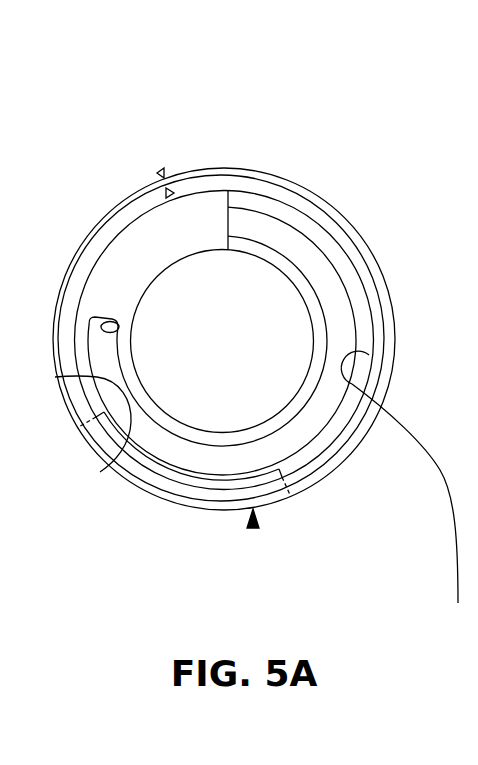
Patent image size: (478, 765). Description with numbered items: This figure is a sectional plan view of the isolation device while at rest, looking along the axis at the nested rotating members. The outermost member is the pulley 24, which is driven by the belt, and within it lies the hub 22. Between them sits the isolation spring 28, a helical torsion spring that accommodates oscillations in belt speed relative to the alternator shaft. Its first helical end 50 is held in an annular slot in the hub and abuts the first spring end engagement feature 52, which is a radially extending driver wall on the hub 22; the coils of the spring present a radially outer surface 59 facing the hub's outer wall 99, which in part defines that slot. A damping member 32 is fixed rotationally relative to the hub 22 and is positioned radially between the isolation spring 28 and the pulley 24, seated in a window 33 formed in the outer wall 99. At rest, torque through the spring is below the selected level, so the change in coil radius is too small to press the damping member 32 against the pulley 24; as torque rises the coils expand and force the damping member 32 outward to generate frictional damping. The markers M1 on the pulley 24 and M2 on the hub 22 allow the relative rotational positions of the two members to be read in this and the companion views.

The hub 22 is at (90, 302).
The pulley 24 is at (105, 468).
The isolation spring 28 is at (339, 332).
The damping member 32 is at (157, 470).
The window 33 is at (253, 528).
The first helical end 50 is at (244, 222).
The first spring end engagement feature 52 is at (240, 192).
The radially outer surface 59 is at (338, 410).
The outer wall of the hub 99 is at (410, 512).
The marker on the pulley M1 is at (146, 166).
The marker on the hub M2 is at (150, 193).